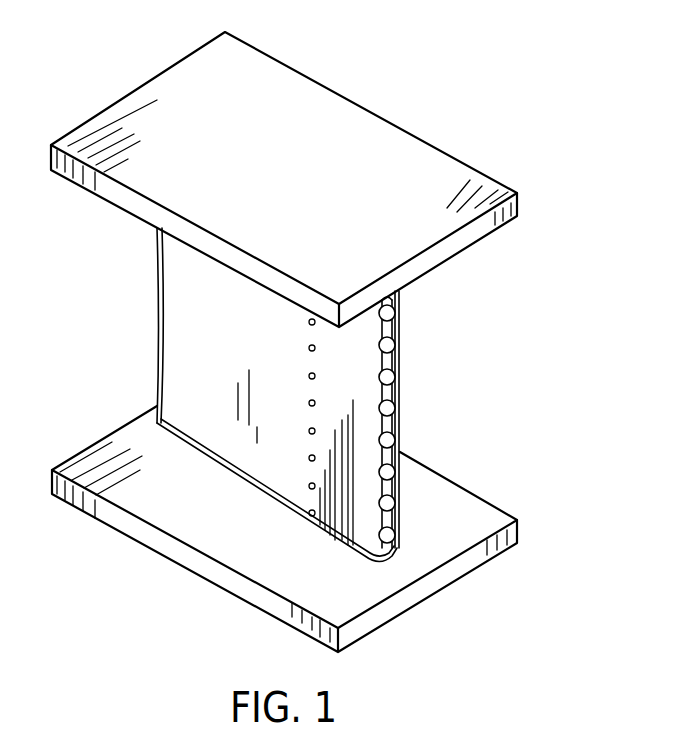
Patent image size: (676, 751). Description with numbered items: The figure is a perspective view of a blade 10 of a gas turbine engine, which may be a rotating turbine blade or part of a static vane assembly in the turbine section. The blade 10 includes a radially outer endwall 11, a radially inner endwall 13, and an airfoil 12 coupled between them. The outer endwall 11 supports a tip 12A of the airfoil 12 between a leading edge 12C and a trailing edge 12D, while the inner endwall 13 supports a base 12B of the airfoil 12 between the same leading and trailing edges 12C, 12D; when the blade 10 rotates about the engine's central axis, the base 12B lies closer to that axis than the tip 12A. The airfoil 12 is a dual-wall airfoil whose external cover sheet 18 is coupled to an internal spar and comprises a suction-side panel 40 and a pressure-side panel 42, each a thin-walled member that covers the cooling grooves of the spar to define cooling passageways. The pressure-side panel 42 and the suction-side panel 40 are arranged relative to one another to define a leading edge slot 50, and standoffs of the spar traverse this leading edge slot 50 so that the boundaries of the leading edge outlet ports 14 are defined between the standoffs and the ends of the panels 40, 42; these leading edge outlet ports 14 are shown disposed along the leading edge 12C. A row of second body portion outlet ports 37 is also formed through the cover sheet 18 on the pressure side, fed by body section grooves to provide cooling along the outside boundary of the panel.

The blade 10 is at (285, 327).
The radially outer endwall 11 is at (303, 100).
The airfoil 12 is at (304, 414).
The tip 12A is at (240, 280).
The base 12B is at (315, 533).
The leading edge 12C is at (449, 419).
The trailing edge 12D is at (158, 278).
The radially inner endwall 13 is at (152, 540).
The leading edge outlet ports 14 is at (392, 441).
The external cover sheet 18 is at (248, 447).
The second body portion outlet ports 37 is at (308, 350).
The suction-side panel 40 is at (400, 352).
The pressure-side panel 42 is at (275, 480).
The leading edge slot 50 is at (420, 422).